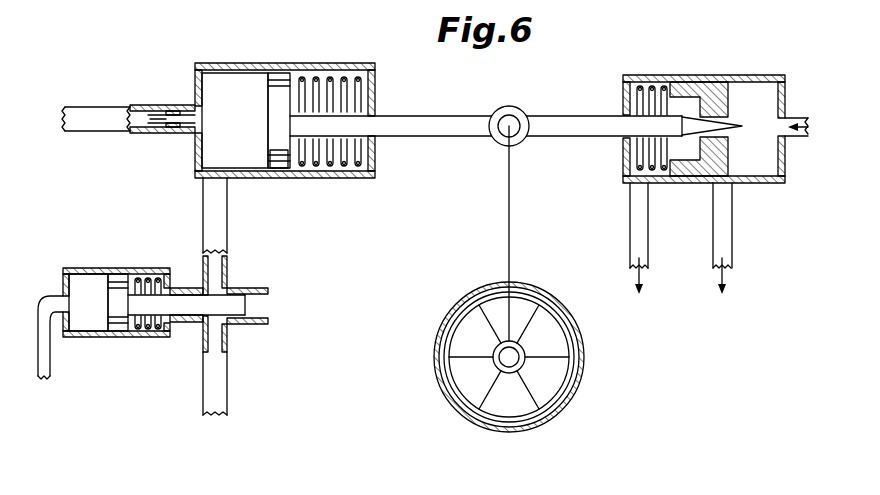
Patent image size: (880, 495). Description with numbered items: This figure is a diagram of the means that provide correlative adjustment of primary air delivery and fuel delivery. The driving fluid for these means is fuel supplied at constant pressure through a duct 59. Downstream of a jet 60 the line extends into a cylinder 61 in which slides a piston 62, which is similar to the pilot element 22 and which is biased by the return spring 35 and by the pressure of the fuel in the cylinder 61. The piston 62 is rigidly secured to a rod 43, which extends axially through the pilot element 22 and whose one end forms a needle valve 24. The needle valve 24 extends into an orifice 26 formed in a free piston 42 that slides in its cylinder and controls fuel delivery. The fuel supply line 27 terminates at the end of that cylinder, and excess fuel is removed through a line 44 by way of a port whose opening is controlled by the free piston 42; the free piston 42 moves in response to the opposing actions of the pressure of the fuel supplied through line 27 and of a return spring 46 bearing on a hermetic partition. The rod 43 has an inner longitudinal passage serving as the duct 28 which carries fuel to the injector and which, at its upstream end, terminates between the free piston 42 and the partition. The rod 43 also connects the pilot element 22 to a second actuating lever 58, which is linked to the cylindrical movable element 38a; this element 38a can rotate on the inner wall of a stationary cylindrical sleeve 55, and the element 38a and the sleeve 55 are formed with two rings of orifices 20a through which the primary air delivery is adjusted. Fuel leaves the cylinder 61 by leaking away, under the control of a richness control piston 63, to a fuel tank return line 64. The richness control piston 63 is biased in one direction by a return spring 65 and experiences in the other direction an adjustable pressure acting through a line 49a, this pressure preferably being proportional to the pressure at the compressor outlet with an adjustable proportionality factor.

The duct 59 is at (95, 112).
The jet 60 is at (166, 124).
The cylinder 61 is at (235, 92).
The pilot element 22 is at (290, 68).
The piston 62 is at (278, 178).
The return spring 35 is at (339, 82).
The rod 43 is at (452, 118).
The needle valve 24 is at (742, 128).
The second actuating lever 58 is at (509, 236).
The orifice 26 is at (730, 112).
The return spring 46 is at (643, 86).
The free piston 42 is at (706, 95).
The fuel supply line 27 is at (791, 112).
The duct 28 is at (630, 233).
The line 44 is at (715, 235).
The movable element 38a is at (576, 339).
The stationary cylindrical sleeve 55 is at (586, 366).
The orifices 20a is at (566, 397).
The fuel tank return line 64 is at (222, 233).
The richness control piston 63 is at (118, 285).
The return spring 65 is at (151, 335).
The line 49a is at (48, 358).